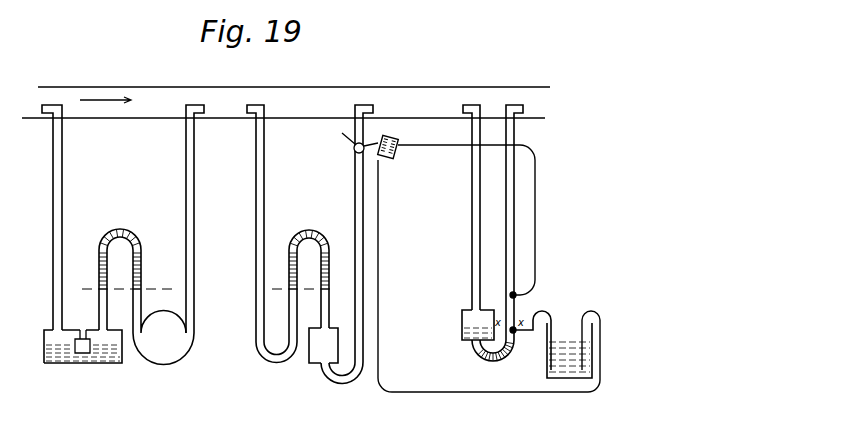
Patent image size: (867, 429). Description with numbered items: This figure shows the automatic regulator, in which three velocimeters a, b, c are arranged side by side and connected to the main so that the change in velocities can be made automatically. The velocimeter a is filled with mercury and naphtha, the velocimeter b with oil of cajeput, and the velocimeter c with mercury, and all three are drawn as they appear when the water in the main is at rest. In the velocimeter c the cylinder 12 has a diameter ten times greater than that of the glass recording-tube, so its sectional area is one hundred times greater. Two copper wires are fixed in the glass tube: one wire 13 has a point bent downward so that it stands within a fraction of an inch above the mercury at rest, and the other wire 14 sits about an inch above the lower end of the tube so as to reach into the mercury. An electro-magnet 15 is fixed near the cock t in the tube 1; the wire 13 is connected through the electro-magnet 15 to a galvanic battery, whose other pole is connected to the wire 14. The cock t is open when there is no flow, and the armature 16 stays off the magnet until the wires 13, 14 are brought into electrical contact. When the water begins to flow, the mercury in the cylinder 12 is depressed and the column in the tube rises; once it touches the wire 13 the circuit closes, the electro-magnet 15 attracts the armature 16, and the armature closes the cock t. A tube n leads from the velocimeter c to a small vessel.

The tube 1 is at (358, 233).
The cylinder 12 is at (477, 335).
The copper wire 13 is at (521, 288).
The copper wire 14 is at (521, 342).
The electro-magnet 15 is at (390, 154).
The armature 16 is at (466, 209).
The velocimeter a is at (119, 285).
The velocimeter b is at (309, 296).
The velocimeter c is at (478, 207).
The cock t is at (357, 147).
The tube n is at (521, 301).